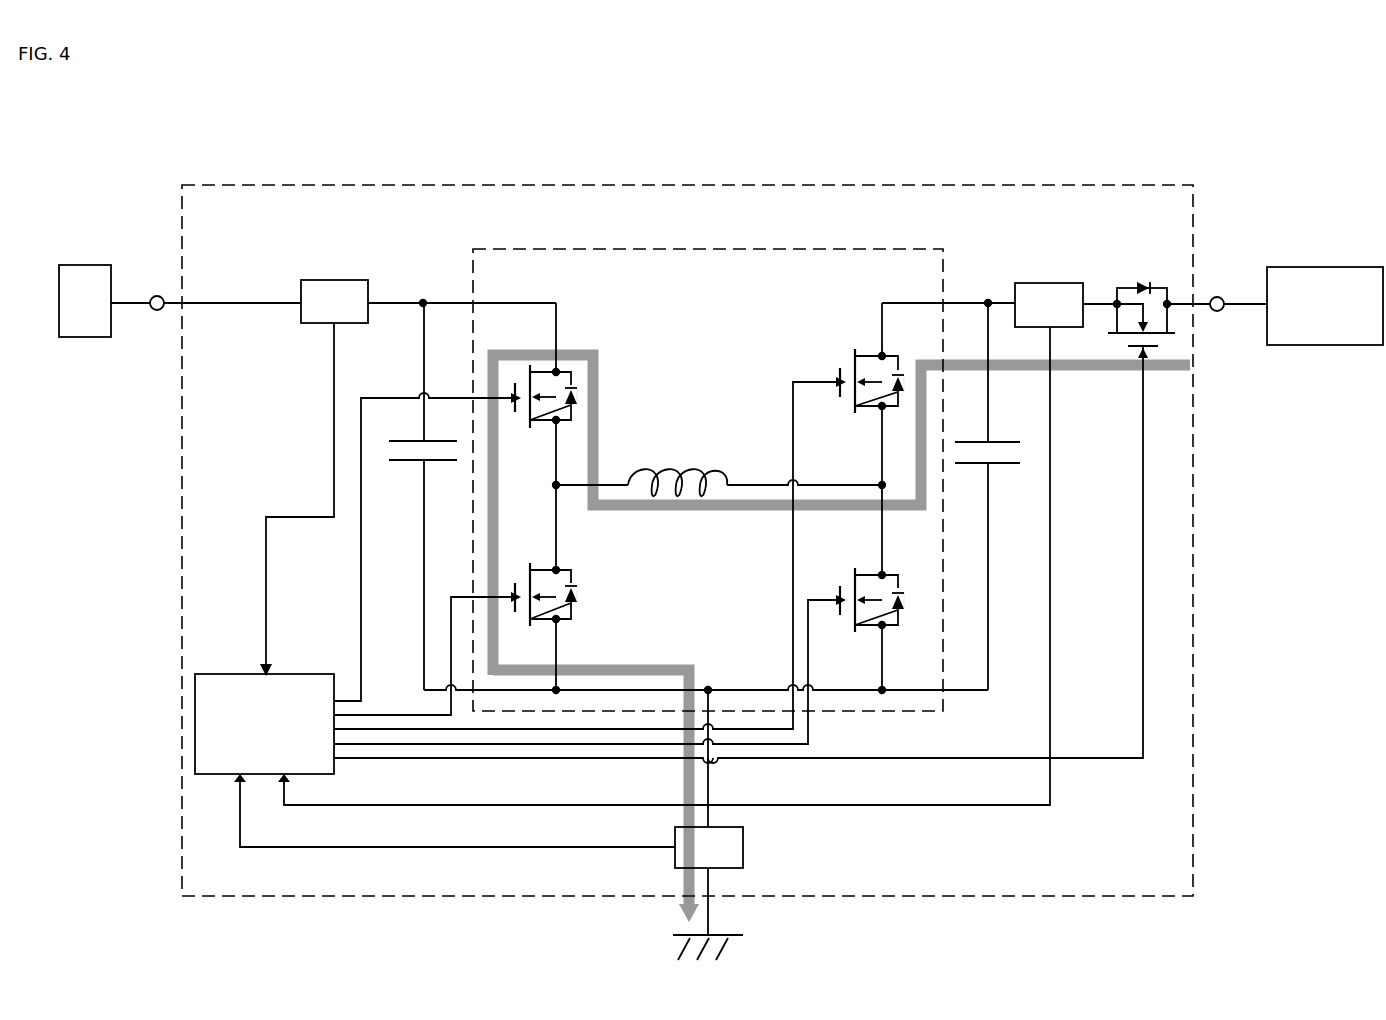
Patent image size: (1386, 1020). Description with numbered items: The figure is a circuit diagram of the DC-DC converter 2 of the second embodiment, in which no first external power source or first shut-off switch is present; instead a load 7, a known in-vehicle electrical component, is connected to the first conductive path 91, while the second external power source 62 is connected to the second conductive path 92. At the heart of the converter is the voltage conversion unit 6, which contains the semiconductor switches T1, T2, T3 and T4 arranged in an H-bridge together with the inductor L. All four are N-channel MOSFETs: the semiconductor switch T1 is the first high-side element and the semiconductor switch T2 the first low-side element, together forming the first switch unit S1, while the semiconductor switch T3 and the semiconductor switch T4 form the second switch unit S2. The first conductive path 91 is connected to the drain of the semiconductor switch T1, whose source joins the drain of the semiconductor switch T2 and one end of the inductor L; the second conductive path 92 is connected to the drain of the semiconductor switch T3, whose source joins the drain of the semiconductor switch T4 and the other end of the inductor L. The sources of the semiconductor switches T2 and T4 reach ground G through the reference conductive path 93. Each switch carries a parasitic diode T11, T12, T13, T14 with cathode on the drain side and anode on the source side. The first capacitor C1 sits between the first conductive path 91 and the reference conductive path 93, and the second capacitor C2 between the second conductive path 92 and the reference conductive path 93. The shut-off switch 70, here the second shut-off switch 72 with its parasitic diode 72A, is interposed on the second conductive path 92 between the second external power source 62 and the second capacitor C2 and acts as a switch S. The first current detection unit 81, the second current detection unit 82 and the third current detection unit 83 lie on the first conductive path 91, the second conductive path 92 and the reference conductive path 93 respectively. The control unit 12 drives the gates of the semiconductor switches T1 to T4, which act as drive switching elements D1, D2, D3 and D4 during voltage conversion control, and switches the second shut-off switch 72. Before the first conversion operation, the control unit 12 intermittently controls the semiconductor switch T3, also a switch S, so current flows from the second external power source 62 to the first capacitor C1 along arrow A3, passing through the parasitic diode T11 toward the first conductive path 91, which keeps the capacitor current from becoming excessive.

The DC-DC converter 2 is at (1105, 186).
The voltage conversion unit 6 is at (790, 248).
The load 7 is at (84, 263).
The control unit 12 is at (213, 776).
The second external power source 62 is at (1305, 267).
The shut-off switch 70 is at (1167, 314).
The second shut-off switch 72 is at (1167, 310).
The parasitic diode 72A is at (1153, 288).
The first current detection unit 81 is at (324, 280).
The second current detection unit 82 is at (1052, 283).
The third current detection unit 83 is at (746, 846).
The first conductive path 91 is at (250, 300).
The second conductive path 92 is at (1200, 303).
The reference conductive path 93 is at (968, 692).
The arrow A3 is at (1108, 372).
The first capacitor C1 is at (413, 466).
The second capacitor C2 is at (972, 470).
The drive switching element D1 is at (535, 371).
The drive switching element D2 is at (535, 569).
The drive switching element D3 is at (857, 356).
The drive switching element D4 is at (860, 574).
The ground G is at (673, 935).
The inductor L is at (675, 470).
The switch S is at (869, 355).
The first switch unit S1 is at (565, 371).
The second switch unit S2 is at (880, 355).
The semiconductor switch T1 is at (551, 371).
The semiconductor switch T2 is at (551, 569).
The semiconductor switch T3 is at (865, 355).
The semiconductor switch T4 is at (875, 573).
The parasitic diode T11 is at (575, 413).
The parasitic diode T12 is at (575, 612).
The parasitic diode T13 is at (898, 368).
The parasitic diode T14 is at (898, 588).